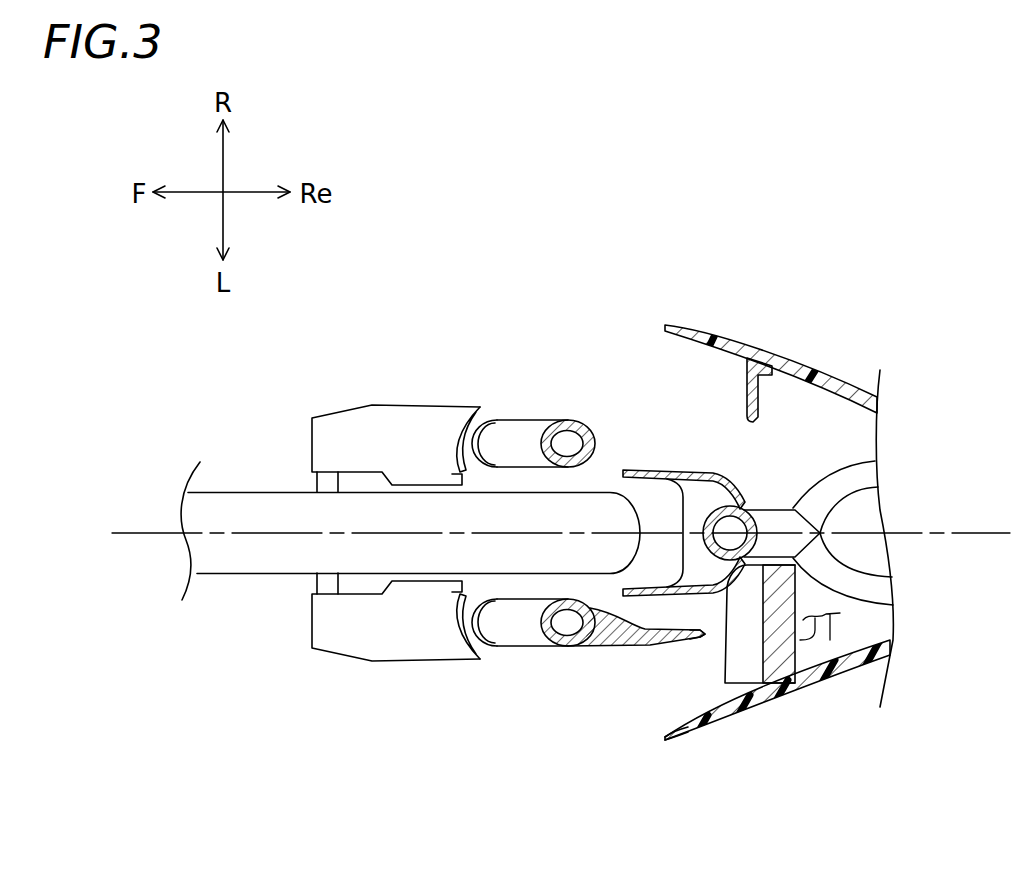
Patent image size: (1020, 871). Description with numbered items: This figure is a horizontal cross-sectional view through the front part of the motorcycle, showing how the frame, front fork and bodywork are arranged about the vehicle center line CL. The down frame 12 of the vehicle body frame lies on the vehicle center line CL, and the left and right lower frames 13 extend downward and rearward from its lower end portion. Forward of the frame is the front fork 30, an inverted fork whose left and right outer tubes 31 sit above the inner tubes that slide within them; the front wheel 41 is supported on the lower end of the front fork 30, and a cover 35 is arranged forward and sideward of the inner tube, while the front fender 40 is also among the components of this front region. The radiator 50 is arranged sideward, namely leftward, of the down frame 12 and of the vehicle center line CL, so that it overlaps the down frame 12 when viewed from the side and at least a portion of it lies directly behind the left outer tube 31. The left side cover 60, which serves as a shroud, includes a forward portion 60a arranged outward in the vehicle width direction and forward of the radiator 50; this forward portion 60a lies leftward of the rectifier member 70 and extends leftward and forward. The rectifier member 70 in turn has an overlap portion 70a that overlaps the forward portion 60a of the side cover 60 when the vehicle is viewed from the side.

The down frame 12 is at (768, 510).
The lower frame 13 is at (835, 462).
The front fork 30 is at (496, 413).
The outer tube 31 is at (527, 420).
The cover 35 is at (373, 407).
The front fender 40 is at (660, 470).
The front wheel 41 is at (272, 492).
The radiator 50 is at (718, 686).
The side cover 60 is at (747, 340).
The forward portion 60a is at (680, 741).
The rectifier member 70 is at (621, 646).
The overlap portion 70a is at (697, 641).
The vehicle center line CL is at (152, 533).